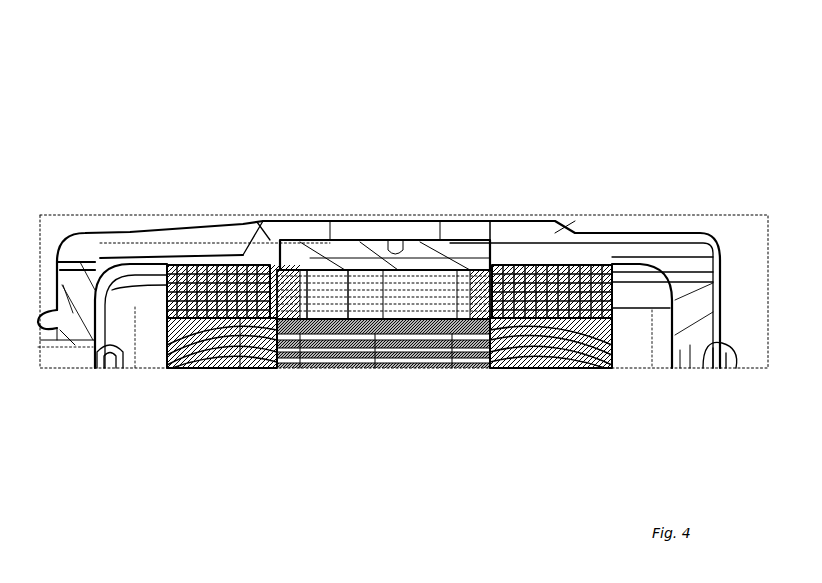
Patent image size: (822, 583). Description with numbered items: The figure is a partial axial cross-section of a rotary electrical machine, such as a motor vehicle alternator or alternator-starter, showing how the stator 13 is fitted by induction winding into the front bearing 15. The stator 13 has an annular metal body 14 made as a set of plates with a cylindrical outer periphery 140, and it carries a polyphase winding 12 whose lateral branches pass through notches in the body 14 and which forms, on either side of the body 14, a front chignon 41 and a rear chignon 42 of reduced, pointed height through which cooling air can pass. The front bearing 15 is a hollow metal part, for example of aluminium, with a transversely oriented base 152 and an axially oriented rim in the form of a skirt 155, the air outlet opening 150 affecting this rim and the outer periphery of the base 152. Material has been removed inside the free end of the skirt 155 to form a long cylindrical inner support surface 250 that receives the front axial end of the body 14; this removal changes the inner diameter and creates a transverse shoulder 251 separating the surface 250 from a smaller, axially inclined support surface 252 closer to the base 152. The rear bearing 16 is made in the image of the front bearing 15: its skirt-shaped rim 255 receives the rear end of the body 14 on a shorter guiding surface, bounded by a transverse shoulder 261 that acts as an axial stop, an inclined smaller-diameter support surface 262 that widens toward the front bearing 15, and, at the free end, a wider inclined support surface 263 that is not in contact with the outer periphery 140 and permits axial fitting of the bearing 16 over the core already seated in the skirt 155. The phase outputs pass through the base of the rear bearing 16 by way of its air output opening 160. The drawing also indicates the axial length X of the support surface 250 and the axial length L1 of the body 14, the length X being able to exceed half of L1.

The winding 12 is at (505, 385).
The stator 13 is at (308, 218).
The body 14 is at (340, 218).
The front bearing 15 is at (715, 367).
The rear bearing 16 is at (85, 372).
The front chignon 41 is at (593, 372).
The rear chignon 42 is at (193, 372).
The outer periphery 140 is at (456, 372).
The air outlet opening 150 is at (670, 228).
The base 152 is at (690, 367).
The skirt 155 is at (445, 210).
The air output opening 160 is at (103, 215).
The cylindrical inner support surface 250 is at (348, 372).
The shoulder 251 is at (508, 215).
The support surface 252 is at (57, 370).
The rim 255 is at (270, 215).
The shoulder 261 is at (305, 372).
The support surface 262 is at (243, 372).
The support surface 263 is at (378, 372).
The axial length of the support surface X is at (489, 270).
The axial length of the body L1 is at (283, 370).